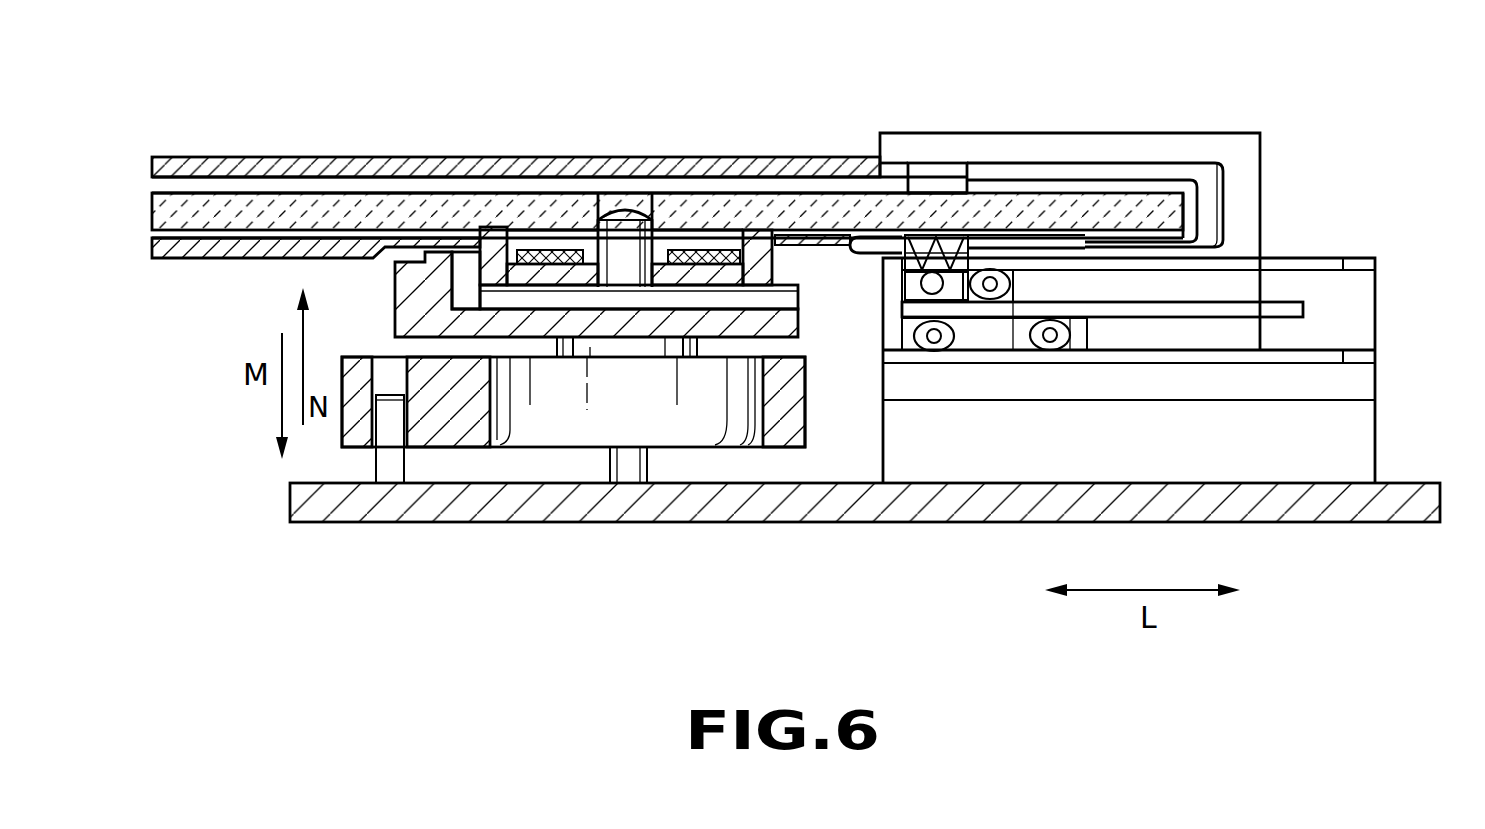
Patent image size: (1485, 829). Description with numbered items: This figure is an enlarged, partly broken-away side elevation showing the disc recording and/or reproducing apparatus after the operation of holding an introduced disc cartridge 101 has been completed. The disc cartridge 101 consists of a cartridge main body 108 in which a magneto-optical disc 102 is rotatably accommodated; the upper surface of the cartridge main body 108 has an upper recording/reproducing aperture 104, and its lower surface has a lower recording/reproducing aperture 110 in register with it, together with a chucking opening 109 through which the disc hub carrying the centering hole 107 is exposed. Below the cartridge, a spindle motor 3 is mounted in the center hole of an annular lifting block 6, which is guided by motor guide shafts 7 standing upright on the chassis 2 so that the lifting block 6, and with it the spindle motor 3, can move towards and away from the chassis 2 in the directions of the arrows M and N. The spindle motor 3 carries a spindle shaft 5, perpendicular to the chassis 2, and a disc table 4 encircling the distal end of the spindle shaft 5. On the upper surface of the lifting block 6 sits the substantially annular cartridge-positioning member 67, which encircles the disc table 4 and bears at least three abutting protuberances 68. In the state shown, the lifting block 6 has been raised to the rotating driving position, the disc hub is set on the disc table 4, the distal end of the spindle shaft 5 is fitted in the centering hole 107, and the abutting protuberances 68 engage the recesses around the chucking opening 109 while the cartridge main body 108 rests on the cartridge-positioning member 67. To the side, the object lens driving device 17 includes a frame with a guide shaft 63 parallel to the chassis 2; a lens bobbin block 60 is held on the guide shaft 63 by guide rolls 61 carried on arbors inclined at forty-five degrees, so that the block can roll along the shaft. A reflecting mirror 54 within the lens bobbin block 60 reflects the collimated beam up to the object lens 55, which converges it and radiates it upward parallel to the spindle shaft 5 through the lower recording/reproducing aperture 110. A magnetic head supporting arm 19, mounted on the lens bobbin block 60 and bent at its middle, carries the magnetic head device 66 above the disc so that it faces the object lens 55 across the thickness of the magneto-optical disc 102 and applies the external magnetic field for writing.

The chassis 2 is at (925, 502).
The spindle motor 3 is at (697, 428).
The disc table 4 is at (758, 243).
The spindle shaft 5 is at (628, 238).
The lifting block 6 is at (467, 430).
The motor guide shafts 7 is at (400, 457).
The object lens driving device 17 is at (1380, 368).
The magnetic head supporting arm 19 is at (1247, 178).
The reflecting mirror 54 is at (885, 303).
The object lens 55 is at (963, 237).
The lens bobbin block 60 is at (1090, 330).
The guide rolls 61 is at (950, 357).
The guide shaft 63 is at (1277, 302).
The magnetic head device 66 is at (940, 183).
The cartridge-positioning member 67 is at (413, 305).
The abutting protuberances 68 is at (443, 245).
The disc cartridge 101 is at (231, 147).
The magneto-optical disc 102 is at (217, 213).
The upper recording/reproducing aperture 104 is at (855, 165).
The centering hole 107 is at (607, 200).
The cartridge main body 108 is at (290, 157).
The chucking opening 109 is at (788, 252).
The lower recording/reproducing aperture 110 is at (1053, 243).